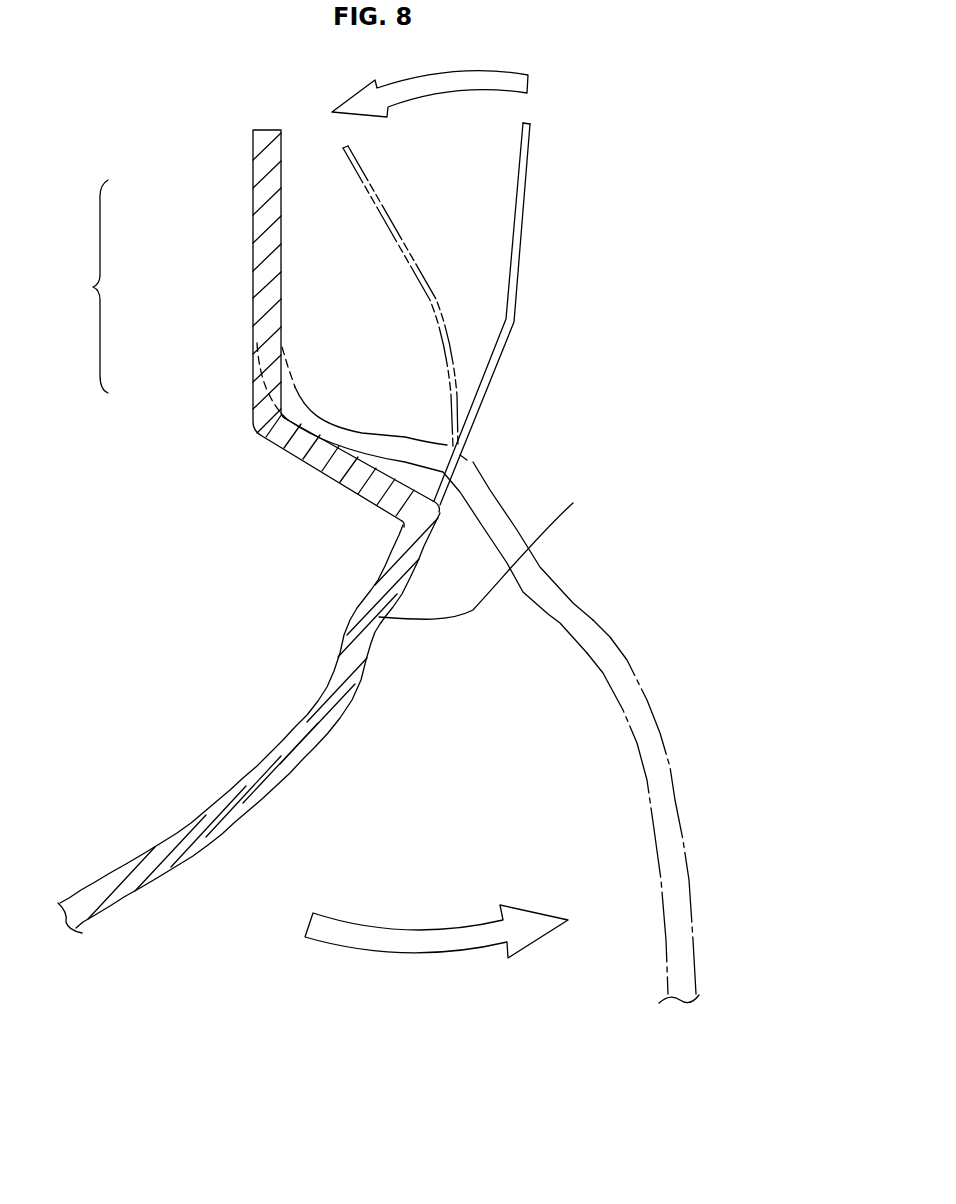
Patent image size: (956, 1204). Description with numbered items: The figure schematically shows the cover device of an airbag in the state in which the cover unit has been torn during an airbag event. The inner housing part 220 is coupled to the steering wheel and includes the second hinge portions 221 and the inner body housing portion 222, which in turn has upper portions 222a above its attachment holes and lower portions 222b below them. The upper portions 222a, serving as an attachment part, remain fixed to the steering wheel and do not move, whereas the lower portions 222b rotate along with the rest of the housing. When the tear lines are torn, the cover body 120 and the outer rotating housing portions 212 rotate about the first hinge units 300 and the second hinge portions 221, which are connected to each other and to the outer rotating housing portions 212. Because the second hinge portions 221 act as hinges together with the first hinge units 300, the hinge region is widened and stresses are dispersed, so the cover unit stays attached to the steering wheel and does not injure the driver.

The cover body 120 is at (647, 781).
The outer rotating housing portions 212 is at (430, 302).
The inner housing part 220 is at (211, 189).
The second hinge portions 221 is at (387, 445).
The inner body housing portion 222 is at (75, 286).
The upper portions 222a is at (253, 195).
The lower portions 222b is at (253, 388).
The first hinge units 300 is at (478, 483).